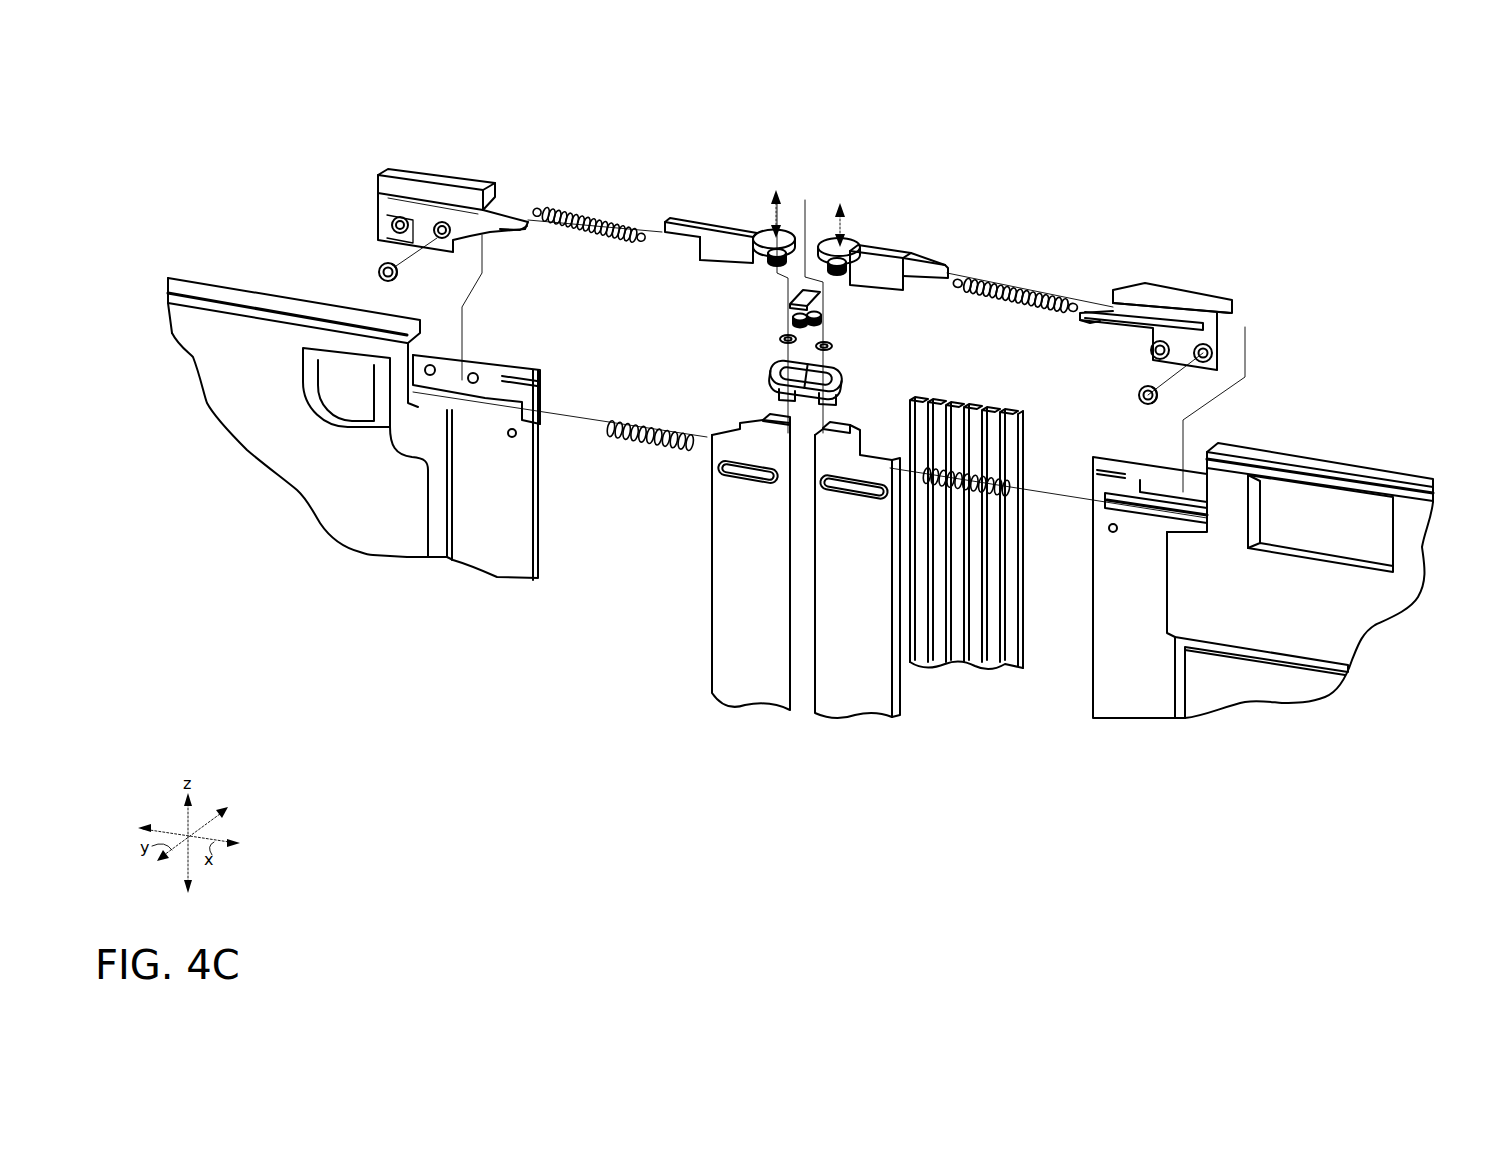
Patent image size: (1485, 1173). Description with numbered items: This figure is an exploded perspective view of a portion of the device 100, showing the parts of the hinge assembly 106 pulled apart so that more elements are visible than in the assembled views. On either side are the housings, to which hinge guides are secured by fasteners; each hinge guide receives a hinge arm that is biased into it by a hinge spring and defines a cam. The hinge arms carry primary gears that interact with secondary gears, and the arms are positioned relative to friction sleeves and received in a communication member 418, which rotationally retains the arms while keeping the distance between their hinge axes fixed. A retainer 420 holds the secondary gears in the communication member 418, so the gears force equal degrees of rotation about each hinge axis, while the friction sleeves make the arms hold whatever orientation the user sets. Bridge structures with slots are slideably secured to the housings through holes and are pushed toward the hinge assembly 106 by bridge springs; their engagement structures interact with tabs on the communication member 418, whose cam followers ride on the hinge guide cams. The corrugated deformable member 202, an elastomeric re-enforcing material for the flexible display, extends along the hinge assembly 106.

The device 100 is at (1325, 105).
The hinge assembly 106 is at (600, 165).
The deformable member 202 is at (1014, 670).
The communication member 418 is at (763, 355).
The retainer 420 is at (807, 288).